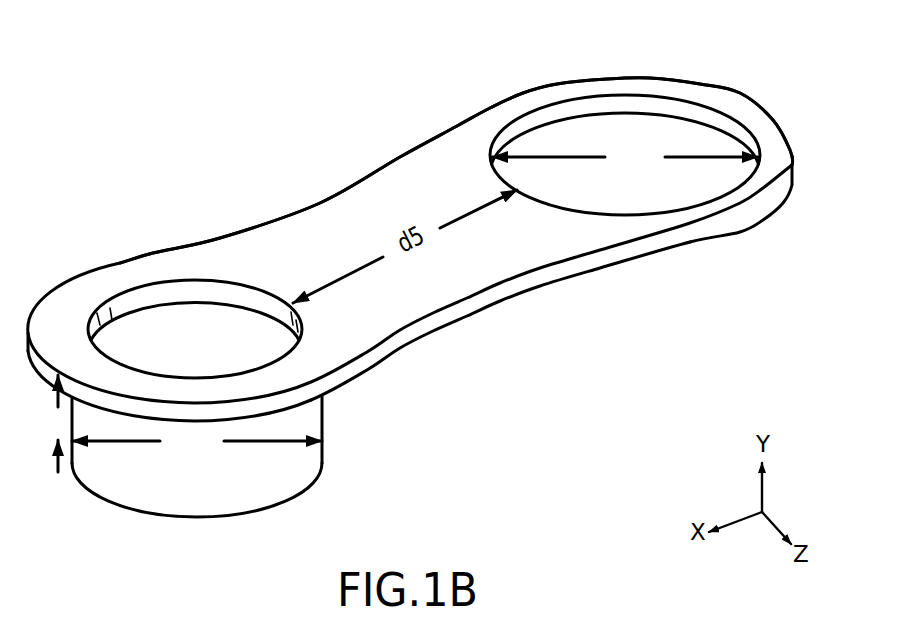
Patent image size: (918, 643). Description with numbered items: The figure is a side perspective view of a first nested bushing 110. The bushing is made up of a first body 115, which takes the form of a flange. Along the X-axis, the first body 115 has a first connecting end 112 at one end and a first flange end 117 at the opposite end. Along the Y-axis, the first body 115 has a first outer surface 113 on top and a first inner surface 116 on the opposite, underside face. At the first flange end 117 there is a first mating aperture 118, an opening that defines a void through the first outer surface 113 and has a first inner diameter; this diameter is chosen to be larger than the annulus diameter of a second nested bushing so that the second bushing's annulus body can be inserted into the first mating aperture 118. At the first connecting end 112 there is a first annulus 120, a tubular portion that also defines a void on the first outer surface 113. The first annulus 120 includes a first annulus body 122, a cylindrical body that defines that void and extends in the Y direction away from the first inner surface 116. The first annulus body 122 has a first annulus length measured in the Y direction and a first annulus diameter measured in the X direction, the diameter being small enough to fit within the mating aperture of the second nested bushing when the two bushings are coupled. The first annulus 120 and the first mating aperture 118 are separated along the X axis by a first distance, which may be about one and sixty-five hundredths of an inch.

The first nested bushing 110 is at (220, 168).
The first connecting end 112 is at (50, 318).
The first outer surface 113 is at (513, 267).
The first body 115 is at (349, 217).
The first inner surface 116 is at (473, 316).
The first flange end 117 is at (575, 93).
The first mating aperture 118 is at (675, 130).
The first annulus 120 is at (161, 323).
The first annulus body 122 is at (306, 461).